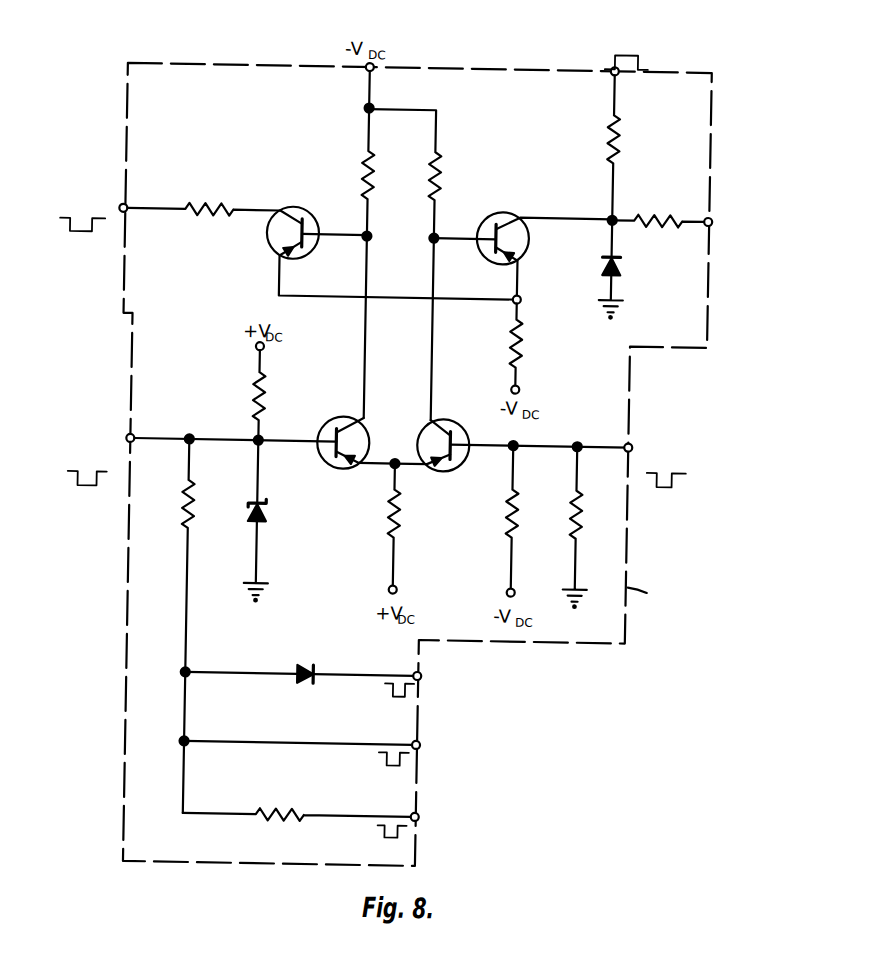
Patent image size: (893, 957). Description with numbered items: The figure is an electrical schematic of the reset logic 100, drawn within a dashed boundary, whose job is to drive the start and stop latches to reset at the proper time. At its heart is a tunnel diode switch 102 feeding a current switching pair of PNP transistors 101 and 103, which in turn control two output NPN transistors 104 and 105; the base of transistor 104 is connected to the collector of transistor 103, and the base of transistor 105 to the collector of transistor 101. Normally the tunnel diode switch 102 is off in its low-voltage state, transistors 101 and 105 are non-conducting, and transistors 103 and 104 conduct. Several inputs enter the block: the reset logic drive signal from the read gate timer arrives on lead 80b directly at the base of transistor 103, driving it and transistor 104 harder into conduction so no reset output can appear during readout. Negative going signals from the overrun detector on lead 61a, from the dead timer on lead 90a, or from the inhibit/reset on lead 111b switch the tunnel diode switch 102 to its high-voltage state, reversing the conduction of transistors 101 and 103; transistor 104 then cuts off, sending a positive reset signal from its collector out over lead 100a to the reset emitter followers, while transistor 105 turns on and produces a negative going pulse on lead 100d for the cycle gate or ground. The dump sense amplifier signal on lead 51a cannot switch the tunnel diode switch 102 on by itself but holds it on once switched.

The reset logic 100 is at (630, 554).
The lead 100a is at (611, 90).
The lead 100d is at (147, 207).
The PNP transistor 101 is at (361, 428).
The tunnel diode switch 102 is at (268, 521).
The PNP transistor 103 is at (444, 421).
The NPN transistor 104 is at (481, 221).
The NPN transistor 105 is at (314, 210).
The lead 111b is at (152, 441).
The lead 80b is at (602, 443).
The lead 51a is at (381, 676).
The lead 61a is at (377, 745).
The lead 90a is at (377, 817).